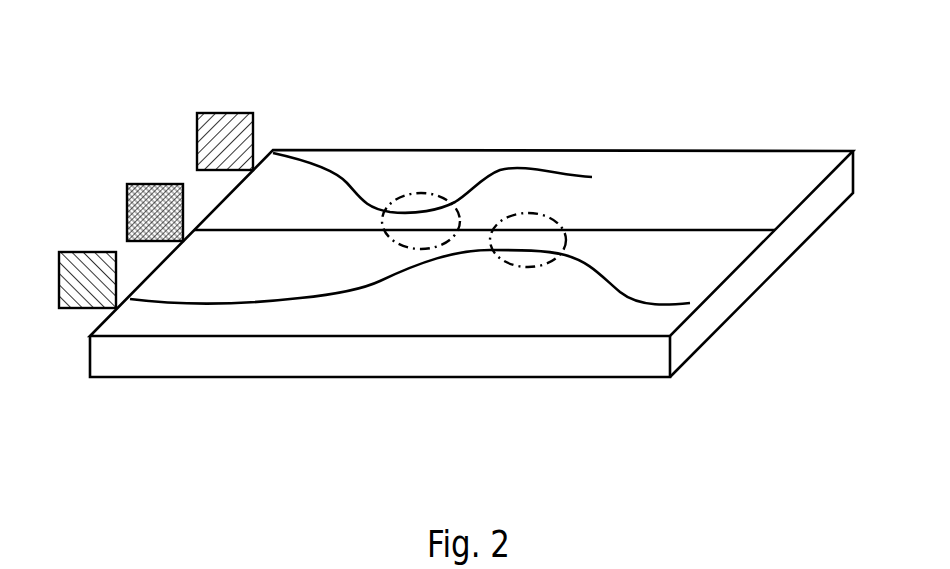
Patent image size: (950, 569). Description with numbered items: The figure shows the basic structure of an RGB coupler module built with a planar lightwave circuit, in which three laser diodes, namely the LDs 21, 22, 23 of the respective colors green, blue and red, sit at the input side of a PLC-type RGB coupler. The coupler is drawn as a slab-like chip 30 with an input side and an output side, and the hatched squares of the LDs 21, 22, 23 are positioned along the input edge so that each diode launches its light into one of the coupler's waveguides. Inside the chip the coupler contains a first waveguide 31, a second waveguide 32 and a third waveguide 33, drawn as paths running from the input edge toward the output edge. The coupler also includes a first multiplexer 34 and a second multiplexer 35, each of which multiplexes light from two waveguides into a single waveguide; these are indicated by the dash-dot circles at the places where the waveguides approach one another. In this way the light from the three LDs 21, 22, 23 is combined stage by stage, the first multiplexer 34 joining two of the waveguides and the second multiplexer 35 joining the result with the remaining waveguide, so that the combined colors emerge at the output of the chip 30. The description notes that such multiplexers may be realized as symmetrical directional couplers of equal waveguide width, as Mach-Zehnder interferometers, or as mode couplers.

The LD 21 is at (227, 112).
The LD 22 is at (158, 183).
The LD 23 is at (85, 250).
The substrate 30 is at (615, 150).
The first waveguide 31 is at (332, 175).
The second waveguide 32 is at (315, 231).
The third waveguide 33 is at (223, 303).
The first multiplexer 34 is at (415, 193).
The second multiplexer 35 is at (518, 267).